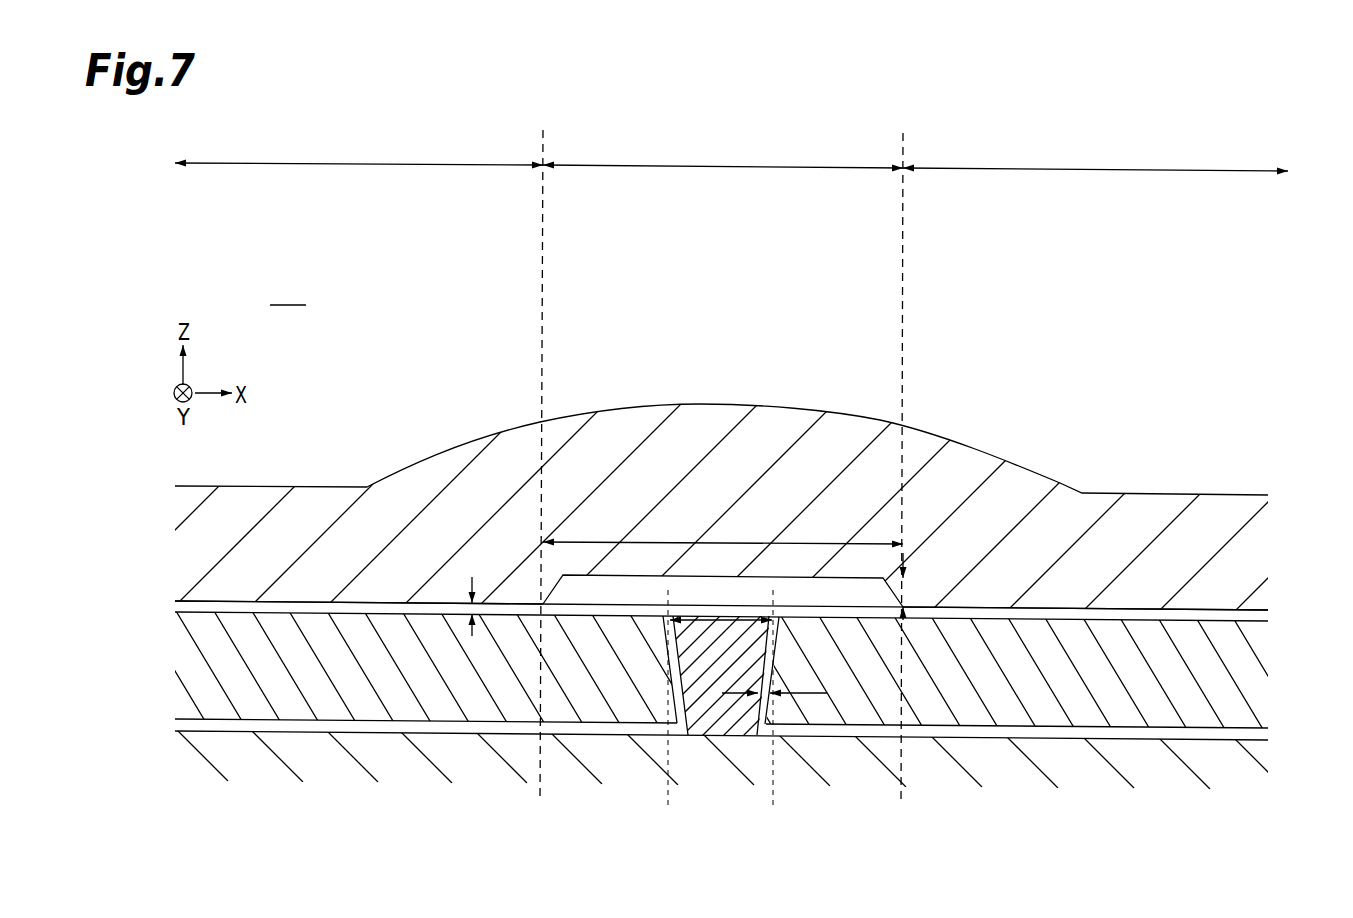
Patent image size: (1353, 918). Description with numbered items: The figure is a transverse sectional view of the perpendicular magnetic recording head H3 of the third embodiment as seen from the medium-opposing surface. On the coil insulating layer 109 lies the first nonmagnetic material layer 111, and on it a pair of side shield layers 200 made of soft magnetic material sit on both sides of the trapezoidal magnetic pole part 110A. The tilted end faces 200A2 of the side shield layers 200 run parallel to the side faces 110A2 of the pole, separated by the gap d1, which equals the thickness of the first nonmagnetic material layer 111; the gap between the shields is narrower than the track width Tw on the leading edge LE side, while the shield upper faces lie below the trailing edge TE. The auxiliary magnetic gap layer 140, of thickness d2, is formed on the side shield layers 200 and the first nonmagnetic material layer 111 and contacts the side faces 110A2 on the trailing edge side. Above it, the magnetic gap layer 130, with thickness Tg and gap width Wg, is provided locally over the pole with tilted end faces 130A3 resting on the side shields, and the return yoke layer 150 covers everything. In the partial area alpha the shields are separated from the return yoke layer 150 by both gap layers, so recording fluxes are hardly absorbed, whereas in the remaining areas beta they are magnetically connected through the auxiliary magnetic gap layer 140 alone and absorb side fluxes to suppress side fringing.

The coil insulating layer 109 is at (1207, 763).
The first nonmagnetic material layer 111 is at (227, 727).
The side shield layers 200 is at (227, 670).
The end faces 200A2 is at (670, 672).
The magnetic pole part 110A is at (720, 705).
The side faces 110A2 is at (665, 614).
The auxiliary magnetic gap layer 140 is at (305, 603).
The magnetic gap layer 130 is at (812, 594).
The end faces 130A3 is at (552, 590).
The return yoke layer 150 is at (1027, 493).
The trailing edge TE is at (687, 614).
The leading edge LE is at (706, 735).
The gap d1 is at (762, 700).
The thickness d2 is at (462, 602).
The track width Tw is at (704, 620).
The thickness Tg is at (914, 586).
The gap width Wg is at (723, 532).
The perpendicular magnetic recording head H3 is at (288, 292).
The partial area alpha is at (723, 153).
The remaining areas beta is at (731, 152).